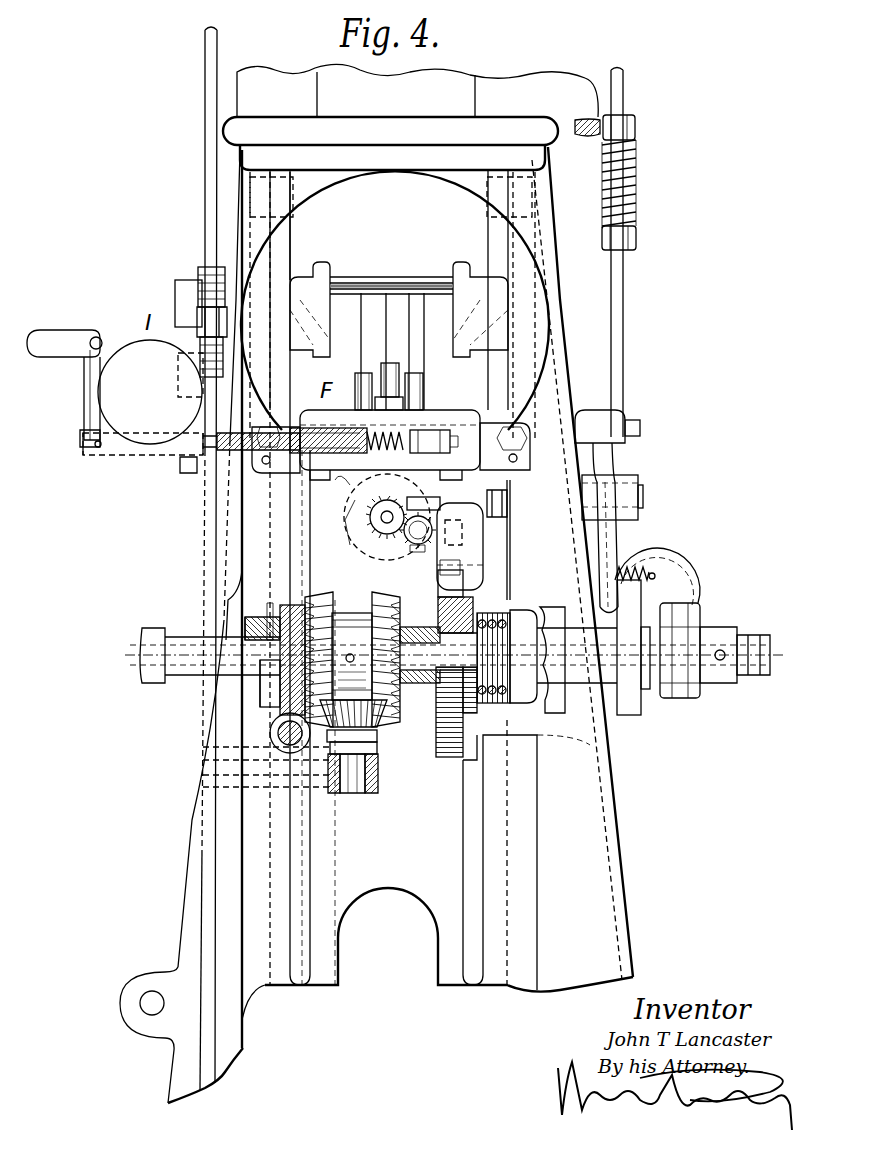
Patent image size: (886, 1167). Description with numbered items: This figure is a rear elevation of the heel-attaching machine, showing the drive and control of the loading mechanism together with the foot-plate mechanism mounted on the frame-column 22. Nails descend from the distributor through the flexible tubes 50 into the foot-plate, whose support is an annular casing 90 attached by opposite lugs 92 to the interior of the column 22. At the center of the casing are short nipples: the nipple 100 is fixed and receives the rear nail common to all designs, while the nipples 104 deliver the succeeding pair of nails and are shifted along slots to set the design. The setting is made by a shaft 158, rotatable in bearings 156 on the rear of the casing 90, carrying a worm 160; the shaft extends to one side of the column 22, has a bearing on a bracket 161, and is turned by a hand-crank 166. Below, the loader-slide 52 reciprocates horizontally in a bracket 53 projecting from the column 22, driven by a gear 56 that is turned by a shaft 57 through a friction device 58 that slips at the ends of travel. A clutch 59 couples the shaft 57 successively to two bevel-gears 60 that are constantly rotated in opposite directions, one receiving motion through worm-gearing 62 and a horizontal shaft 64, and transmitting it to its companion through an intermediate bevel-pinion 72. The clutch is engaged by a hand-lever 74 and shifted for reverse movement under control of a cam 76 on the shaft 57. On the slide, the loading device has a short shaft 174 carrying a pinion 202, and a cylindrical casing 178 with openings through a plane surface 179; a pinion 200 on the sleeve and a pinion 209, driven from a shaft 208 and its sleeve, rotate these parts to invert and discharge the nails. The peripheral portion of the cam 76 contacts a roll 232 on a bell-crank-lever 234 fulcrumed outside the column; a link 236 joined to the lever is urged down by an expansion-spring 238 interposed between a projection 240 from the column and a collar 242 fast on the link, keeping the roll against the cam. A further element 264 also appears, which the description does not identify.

The column 22 is at (617, 882).
The flexible tubes 50 is at (411, 312).
The slide 52 is at (455, 530).
The bracket 53 is at (470, 518).
The gear 56 is at (445, 745).
The shaft 57 is at (142, 658).
The friction device 58 is at (475, 600).
The clutch 59 is at (352, 620).
The bevel-gears 60 is at (310, 598).
The worm-gearing 62 is at (272, 712).
The horizontal shaft 64 is at (295, 745).
The intermediate bevel-pinion 72 is at (375, 732).
The hand-lever 74 is at (642, 558).
The cam 76 is at (640, 717).
The annular casing 90 is at (355, 490).
The lugs 92 is at (262, 462).
The nipple 100 is at (396, 368).
The nipples 104 is at (414, 392).
The bearings 156 is at (420, 440).
The shaft 158 is at (80, 441).
The worm 160 is at (398, 437).
The bracket 161 is at (128, 450).
The hand-crank 166 is at (62, 338).
The short shaft 174 is at (381, 520).
The cylindrical casing 178 is at (375, 535).
The plane surface 179 is at (385, 450).
The pinion 200 is at (420, 522).
The pinion 202 is at (420, 498).
The shaft 208 is at (460, 566).
The pinion 209 is at (412, 550).
The roll 232 is at (688, 578).
The bell-crank-lever 234 is at (630, 475).
The link 236 is at (620, 276).
The expansion-spring 238 is at (631, 180).
The projection 240 is at (637, 132).
The collar 242 is at (633, 236).
The rod 264 is at (205, 172).